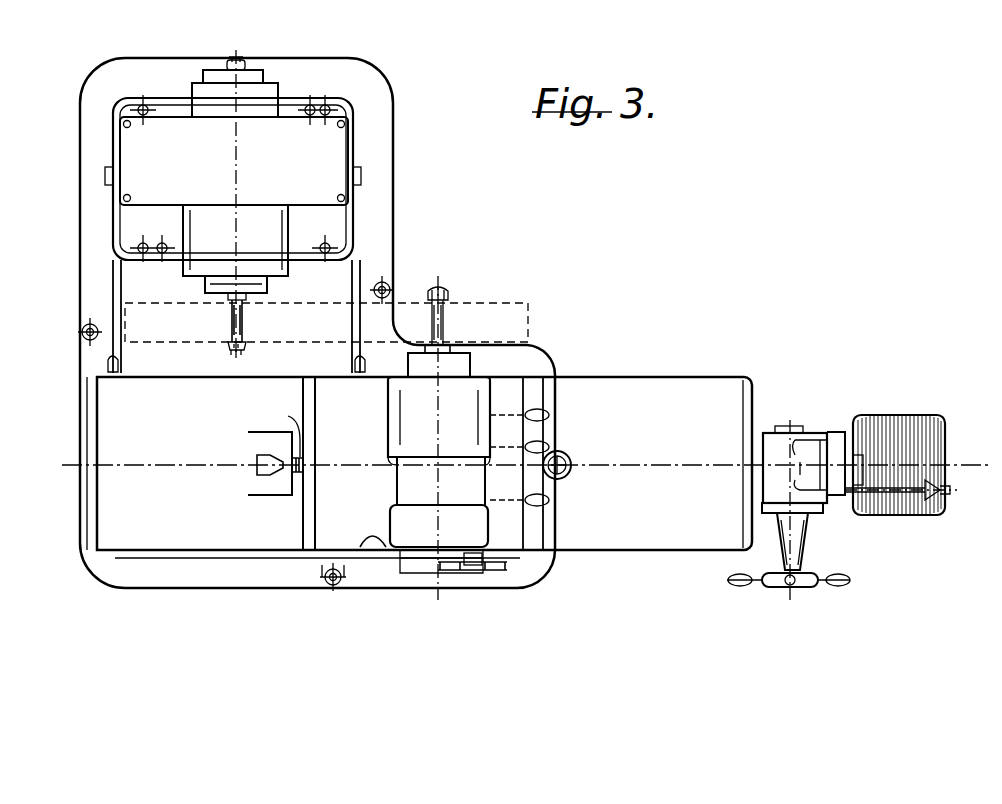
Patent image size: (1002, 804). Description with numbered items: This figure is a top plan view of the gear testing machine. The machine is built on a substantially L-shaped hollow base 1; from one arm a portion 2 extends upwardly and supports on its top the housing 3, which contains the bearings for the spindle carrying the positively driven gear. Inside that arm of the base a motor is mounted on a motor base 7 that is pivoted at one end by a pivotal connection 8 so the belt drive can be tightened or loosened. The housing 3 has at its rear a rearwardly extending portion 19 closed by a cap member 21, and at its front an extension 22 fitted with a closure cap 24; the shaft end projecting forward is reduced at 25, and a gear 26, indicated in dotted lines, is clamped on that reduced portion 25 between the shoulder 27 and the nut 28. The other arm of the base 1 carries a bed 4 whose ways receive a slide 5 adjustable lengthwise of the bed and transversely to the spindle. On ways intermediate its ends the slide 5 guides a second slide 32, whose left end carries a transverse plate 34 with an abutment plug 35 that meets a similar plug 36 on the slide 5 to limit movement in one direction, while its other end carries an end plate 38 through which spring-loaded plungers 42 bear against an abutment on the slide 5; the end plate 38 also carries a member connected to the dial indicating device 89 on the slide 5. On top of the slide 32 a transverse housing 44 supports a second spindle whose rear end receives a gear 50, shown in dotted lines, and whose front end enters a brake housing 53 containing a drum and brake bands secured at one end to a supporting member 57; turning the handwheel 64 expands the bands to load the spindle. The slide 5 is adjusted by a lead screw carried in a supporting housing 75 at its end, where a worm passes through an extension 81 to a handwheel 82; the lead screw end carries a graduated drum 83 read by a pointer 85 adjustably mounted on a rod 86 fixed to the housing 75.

The base 1 is at (387, 226).
The portion 2 is at (353, 104).
The housing 3 is at (340, 148).
The bed 4 is at (516, 465).
The slide 5 is at (740, 377).
The motor base 7 is at (456, 270).
The pivotal connection 8 is at (262, 50).
The rearwardly extending portion 19 is at (285, 98).
The cap member 21 is at (260, 80).
The extension 22 is at (288, 236).
The closure cap 24 is at (266, 282).
The reduced portion 25 is at (243, 322).
The gear 26 is at (310, 325).
The shoulder 27 is at (229, 303).
The nut 28 is at (228, 348).
The slide 32 is at (344, 536).
The plate 34 is at (318, 420).
The abutment plug 35 is at (304, 464).
The plug 36 is at (281, 428).
The end plate 38 is at (525, 392).
The plungers 42 is at (548, 418).
The housing 44 is at (396, 480).
The gear 50 is at (526, 304).
The brake housing 53 is at (405, 528).
The supporting member 57 is at (248, 488).
The handwheel 64 is at (482, 572).
The supporting housing 75 is at (800, 430).
The extension 81 is at (795, 540).
The handwheel 82 is at (805, 588).
The drum 83 is at (908, 418).
The pointer 85 is at (935, 484).
The rod 86 is at (885, 516).
The dial indicating device 89 is at (568, 458).